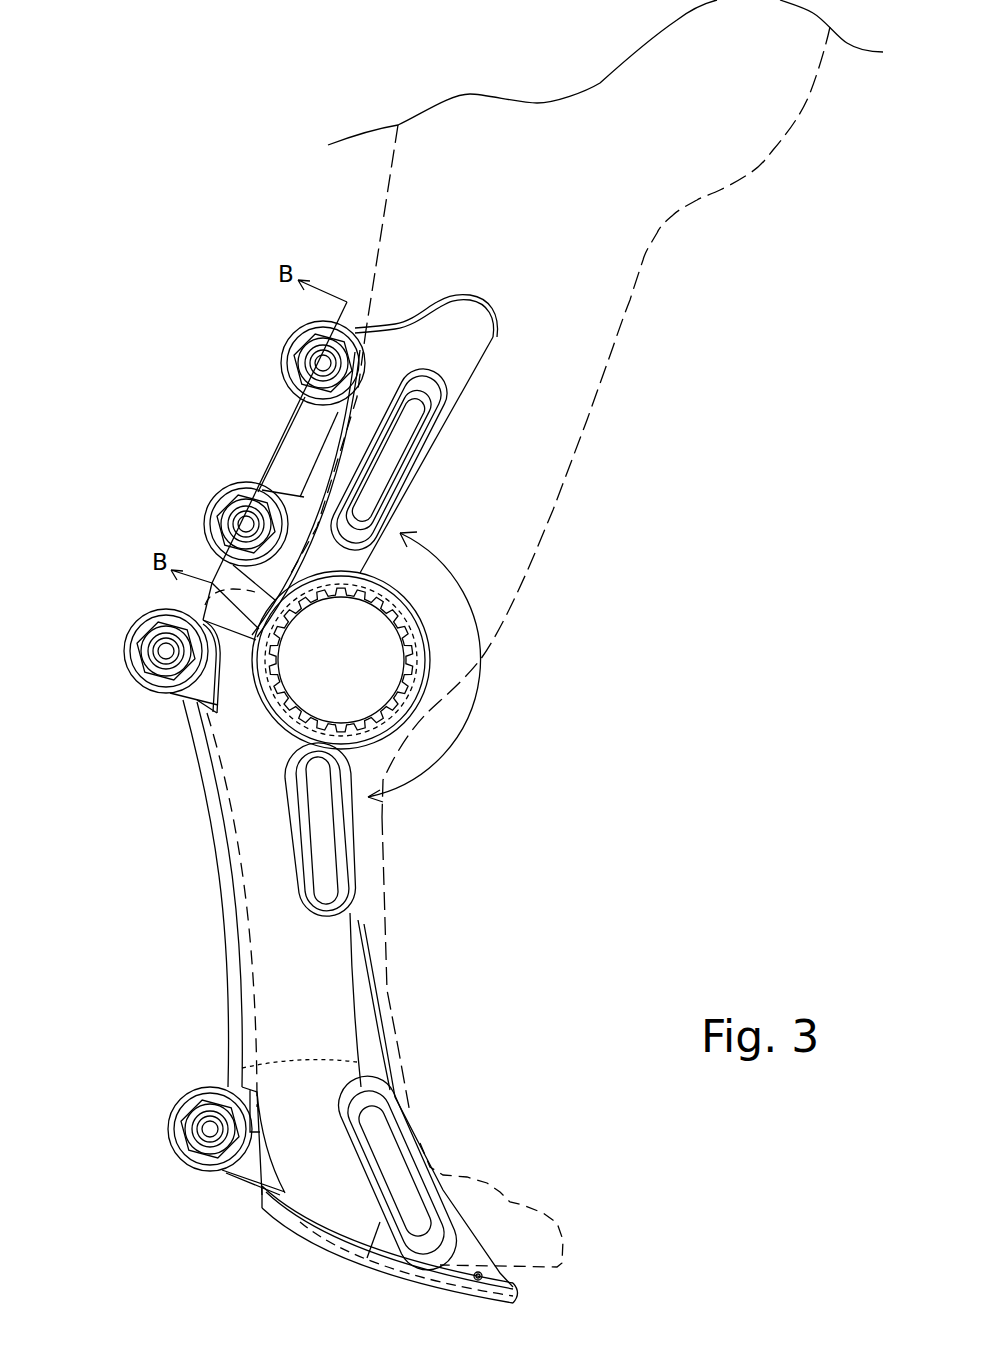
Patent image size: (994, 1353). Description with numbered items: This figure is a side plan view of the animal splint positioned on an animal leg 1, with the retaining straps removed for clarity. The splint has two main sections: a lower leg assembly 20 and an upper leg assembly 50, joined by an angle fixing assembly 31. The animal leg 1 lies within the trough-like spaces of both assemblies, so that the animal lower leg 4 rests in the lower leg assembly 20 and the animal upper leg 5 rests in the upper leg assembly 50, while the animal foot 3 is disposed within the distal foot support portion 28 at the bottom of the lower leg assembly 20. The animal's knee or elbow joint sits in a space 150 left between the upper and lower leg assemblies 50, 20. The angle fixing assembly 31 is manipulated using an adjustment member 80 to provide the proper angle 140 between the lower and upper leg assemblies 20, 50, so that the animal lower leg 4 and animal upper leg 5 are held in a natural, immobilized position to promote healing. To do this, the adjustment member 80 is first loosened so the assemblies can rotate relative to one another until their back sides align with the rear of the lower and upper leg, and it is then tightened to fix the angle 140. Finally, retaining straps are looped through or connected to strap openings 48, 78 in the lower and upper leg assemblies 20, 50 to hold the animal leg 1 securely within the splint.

The animal leg 1 is at (553, 510).
The animal foot 3 is at (510, 1202).
The animal lower leg 4 is at (393, 1018).
The animal upper leg 5 is at (537, 553).
The lower leg assembly 20 is at (227, 983).
The distal foot support portion 28 is at (310, 1243).
The angle fixing assembly 31 is at (273, 727).
The strap opening 48 is at (390, 1152).
The upper leg assembly 50 is at (457, 432).
The strap opening 78 is at (390, 460).
The adjustment member 80 is at (341, 660).
The angle 140 is at (478, 687).
The space 150 is at (195, 593).